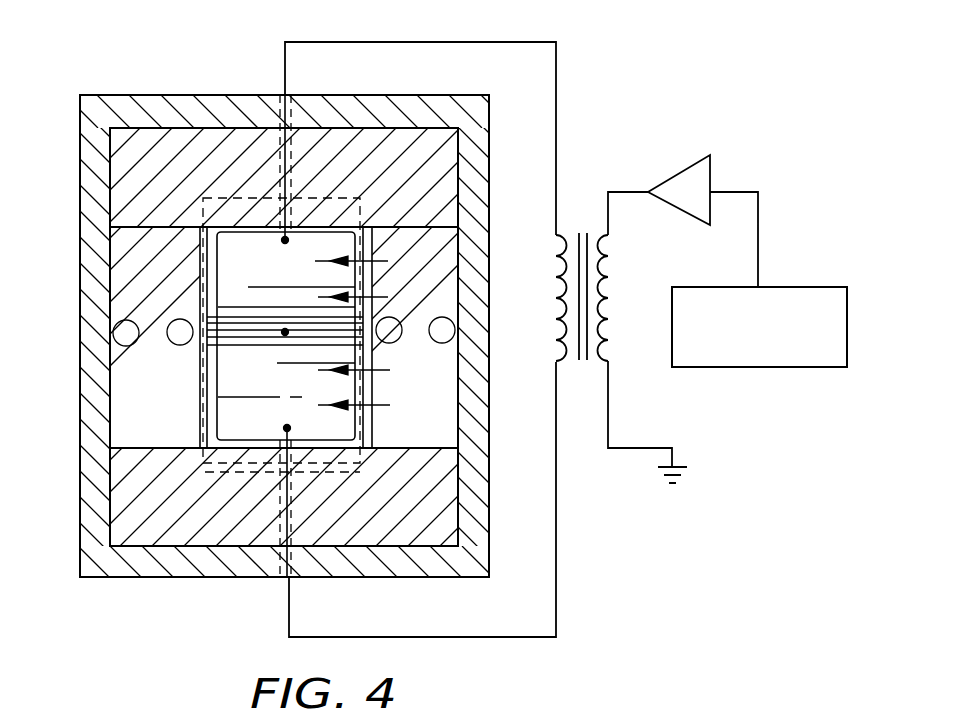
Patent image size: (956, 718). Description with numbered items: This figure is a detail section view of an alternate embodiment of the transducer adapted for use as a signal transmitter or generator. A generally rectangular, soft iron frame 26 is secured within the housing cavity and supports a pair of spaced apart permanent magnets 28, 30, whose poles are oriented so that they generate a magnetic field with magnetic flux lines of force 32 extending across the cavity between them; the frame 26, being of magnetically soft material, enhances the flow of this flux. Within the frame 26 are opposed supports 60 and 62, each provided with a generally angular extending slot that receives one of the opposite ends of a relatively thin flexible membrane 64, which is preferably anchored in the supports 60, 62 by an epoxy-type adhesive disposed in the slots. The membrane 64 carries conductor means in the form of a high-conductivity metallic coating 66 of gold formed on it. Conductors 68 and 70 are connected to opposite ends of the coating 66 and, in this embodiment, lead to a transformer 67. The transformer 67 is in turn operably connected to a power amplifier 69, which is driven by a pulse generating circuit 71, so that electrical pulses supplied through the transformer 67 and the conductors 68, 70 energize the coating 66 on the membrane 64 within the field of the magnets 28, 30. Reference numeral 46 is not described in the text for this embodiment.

The soft iron frame 26 is at (88, 455).
The permanent magnet 28 is at (128, 267).
The permanent magnet 30 is at (442, 251).
The magnetic flux lines of force 32 is at (330, 405).
The plasma channel / conductor 46 is at (285, 332).
The support 60 is at (202, 148).
The support 62 is at (120, 530).
The flexible membrane 64 is at (195, 432).
The metallic coating 66 is at (243, 427).
The transformer 67 is at (560, 298).
The conductor 68 is at (481, 42).
The power amplifier 69 is at (681, 172).
The conductor 70 is at (397, 637).
The pulse generating circuit 71 is at (733, 368).